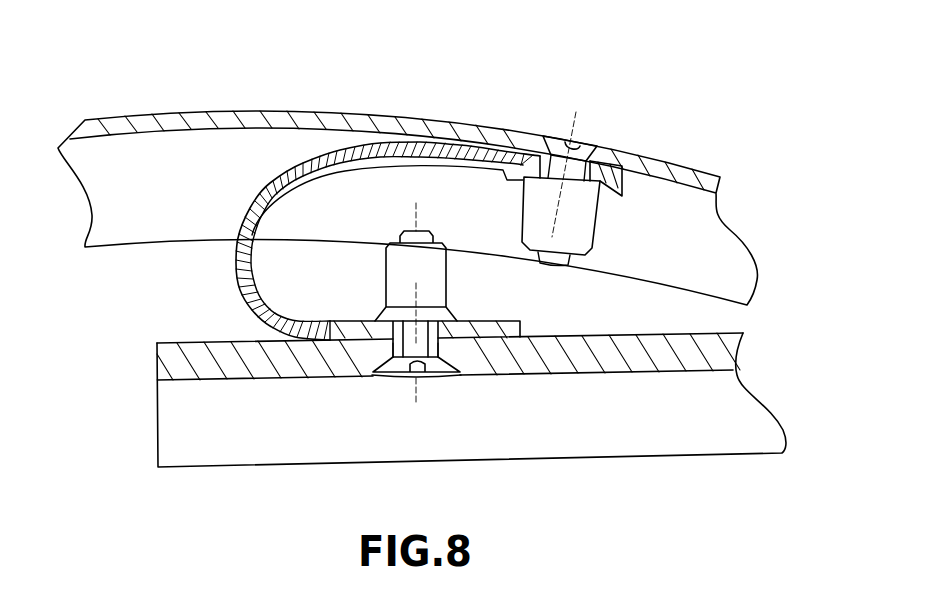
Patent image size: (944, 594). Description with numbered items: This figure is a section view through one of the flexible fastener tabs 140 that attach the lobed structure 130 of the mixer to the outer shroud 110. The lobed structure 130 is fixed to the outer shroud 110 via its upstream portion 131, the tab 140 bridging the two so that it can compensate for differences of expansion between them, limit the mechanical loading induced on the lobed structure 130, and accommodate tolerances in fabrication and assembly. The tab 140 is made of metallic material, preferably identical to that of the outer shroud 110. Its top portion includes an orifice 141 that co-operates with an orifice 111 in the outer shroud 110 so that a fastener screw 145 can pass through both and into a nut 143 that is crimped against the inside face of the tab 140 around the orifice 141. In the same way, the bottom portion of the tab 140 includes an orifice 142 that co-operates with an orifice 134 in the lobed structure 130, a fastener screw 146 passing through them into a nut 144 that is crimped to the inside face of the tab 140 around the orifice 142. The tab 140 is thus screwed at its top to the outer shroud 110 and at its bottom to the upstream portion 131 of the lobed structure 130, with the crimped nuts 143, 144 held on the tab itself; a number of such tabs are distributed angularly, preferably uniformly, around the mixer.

The outer shroud 110 is at (191, 114).
The orifice in outer shroud 111 is at (548, 138).
The lobed structure 130 is at (500, 376).
The upstream portion of lobed structure 131 is at (606, 333).
The orifice in lobed structure 134 is at (378, 346).
The flexible fastener tab 140 is at (234, 221).
The orifice in top portion of tab 141 is at (598, 179).
The orifice in bottom portion of tab 142 is at (458, 322).
The nut 143 is at (580, 226).
The nut 144 is at (398, 274).
The fastener screw 145 is at (553, 138).
The fastener screw 146 is at (442, 376).